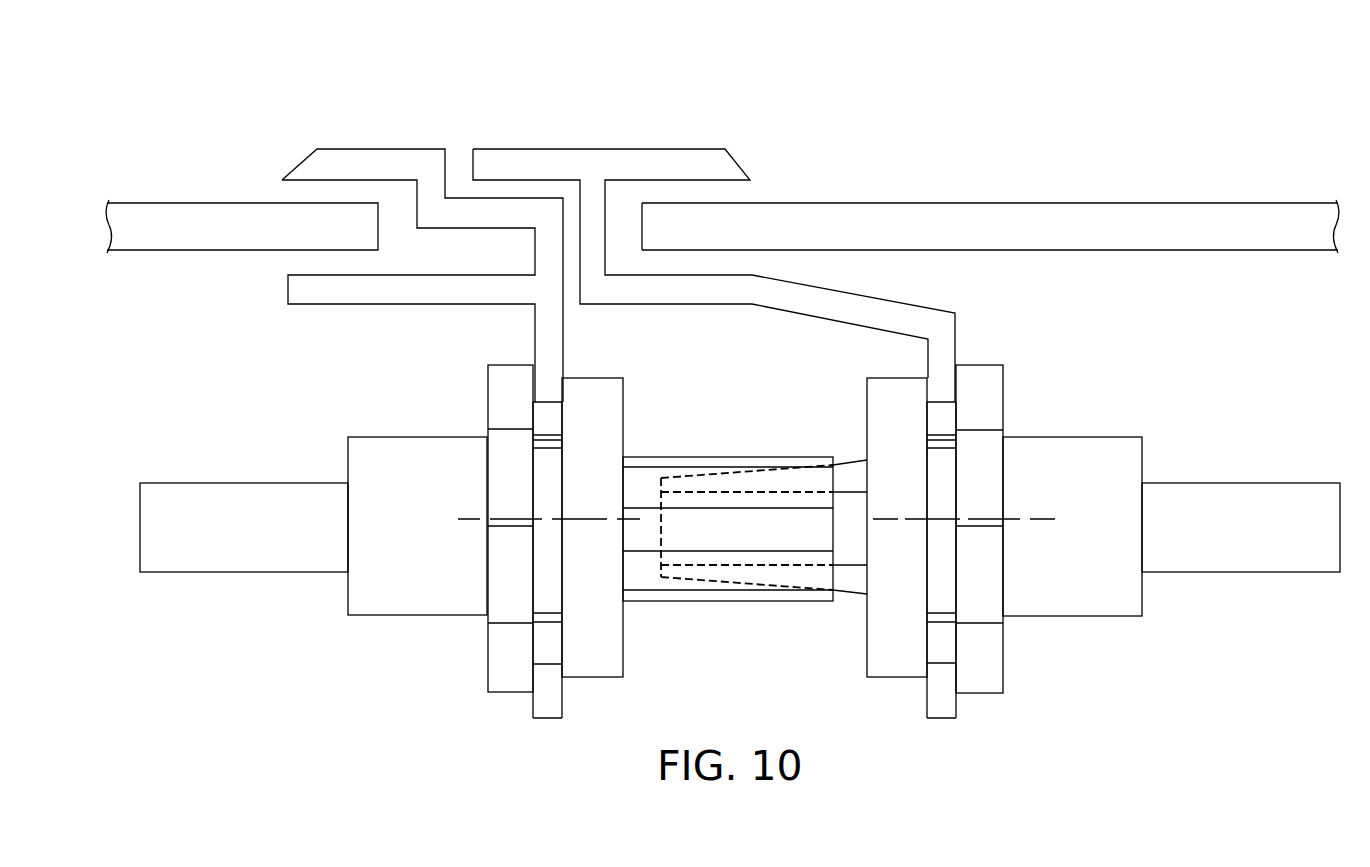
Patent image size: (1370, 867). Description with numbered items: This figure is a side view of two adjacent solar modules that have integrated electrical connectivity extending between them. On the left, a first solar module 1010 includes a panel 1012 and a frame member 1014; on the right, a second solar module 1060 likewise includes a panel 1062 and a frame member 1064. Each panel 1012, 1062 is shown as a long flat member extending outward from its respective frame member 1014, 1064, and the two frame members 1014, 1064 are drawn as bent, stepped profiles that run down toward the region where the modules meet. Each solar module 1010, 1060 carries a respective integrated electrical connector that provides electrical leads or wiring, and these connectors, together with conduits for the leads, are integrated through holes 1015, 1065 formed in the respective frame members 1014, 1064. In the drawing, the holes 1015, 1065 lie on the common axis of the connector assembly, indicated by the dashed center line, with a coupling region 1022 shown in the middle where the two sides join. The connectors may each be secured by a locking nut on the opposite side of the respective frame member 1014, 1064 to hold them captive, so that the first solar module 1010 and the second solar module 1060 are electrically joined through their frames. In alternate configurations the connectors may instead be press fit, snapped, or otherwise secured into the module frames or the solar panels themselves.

The first solar module 1010 is at (245, 80).
The panel 1012 is at (135, 222).
The frame member 1014 is at (413, 120).
The hole 1015 is at (468, 519).
The coupling hub 1022 is at (642, 538).
The second solar module 1060 is at (968, 117).
The panel 1062 is at (1135, 222).
The frame member 1064 is at (743, 150).
The hole 1065 is at (1040, 519).